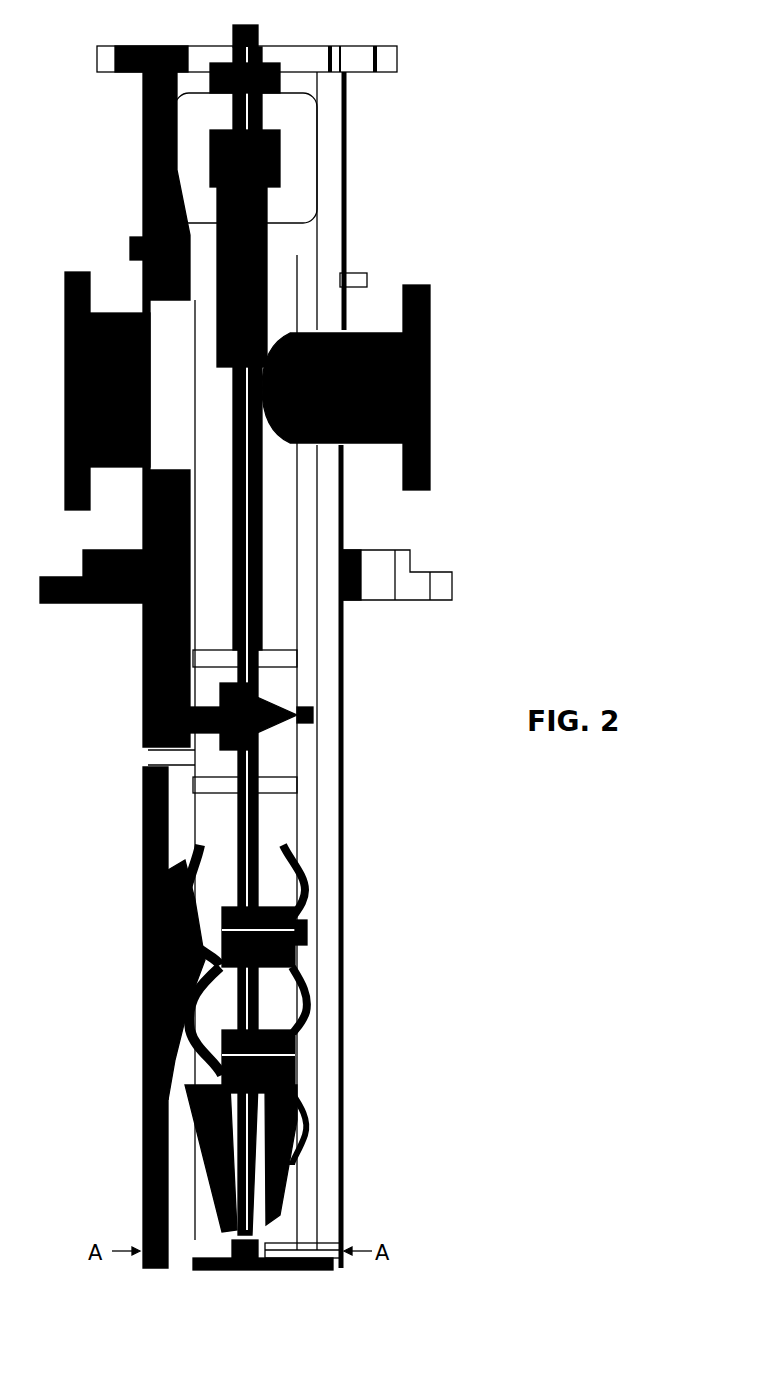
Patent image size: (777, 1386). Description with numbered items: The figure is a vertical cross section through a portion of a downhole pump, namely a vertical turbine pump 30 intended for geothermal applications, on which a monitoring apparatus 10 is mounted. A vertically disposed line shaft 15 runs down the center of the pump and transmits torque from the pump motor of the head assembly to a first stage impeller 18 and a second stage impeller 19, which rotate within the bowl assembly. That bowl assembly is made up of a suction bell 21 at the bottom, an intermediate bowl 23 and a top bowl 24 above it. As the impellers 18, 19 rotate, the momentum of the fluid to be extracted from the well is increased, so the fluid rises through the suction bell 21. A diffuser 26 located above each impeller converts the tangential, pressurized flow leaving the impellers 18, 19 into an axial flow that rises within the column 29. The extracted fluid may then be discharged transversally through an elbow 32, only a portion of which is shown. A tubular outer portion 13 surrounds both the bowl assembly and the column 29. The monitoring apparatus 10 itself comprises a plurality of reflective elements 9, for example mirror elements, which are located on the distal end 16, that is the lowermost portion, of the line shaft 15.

The reflective elements 9 is at (302, 1276).
The monitoring apparatus 10 is at (253, 1280).
The tubular outer portion 13 is at (242, 647).
The line shaft 15 is at (317, 735).
The distal end 16 is at (237, 1247).
The first stage impeller 18 is at (340, 1061).
The second stage impeller 19 is at (335, 934).
The suction bell 21 is at (317, 1158).
The intermediate bowl 23 is at (319, 1016).
The top bowl 24 is at (316, 905).
The diffuser 26 is at (141, 980).
The column 29 is at (332, 641).
The vertical turbine pump 30 is at (517, 270).
The elbow 32 is at (65, 483).